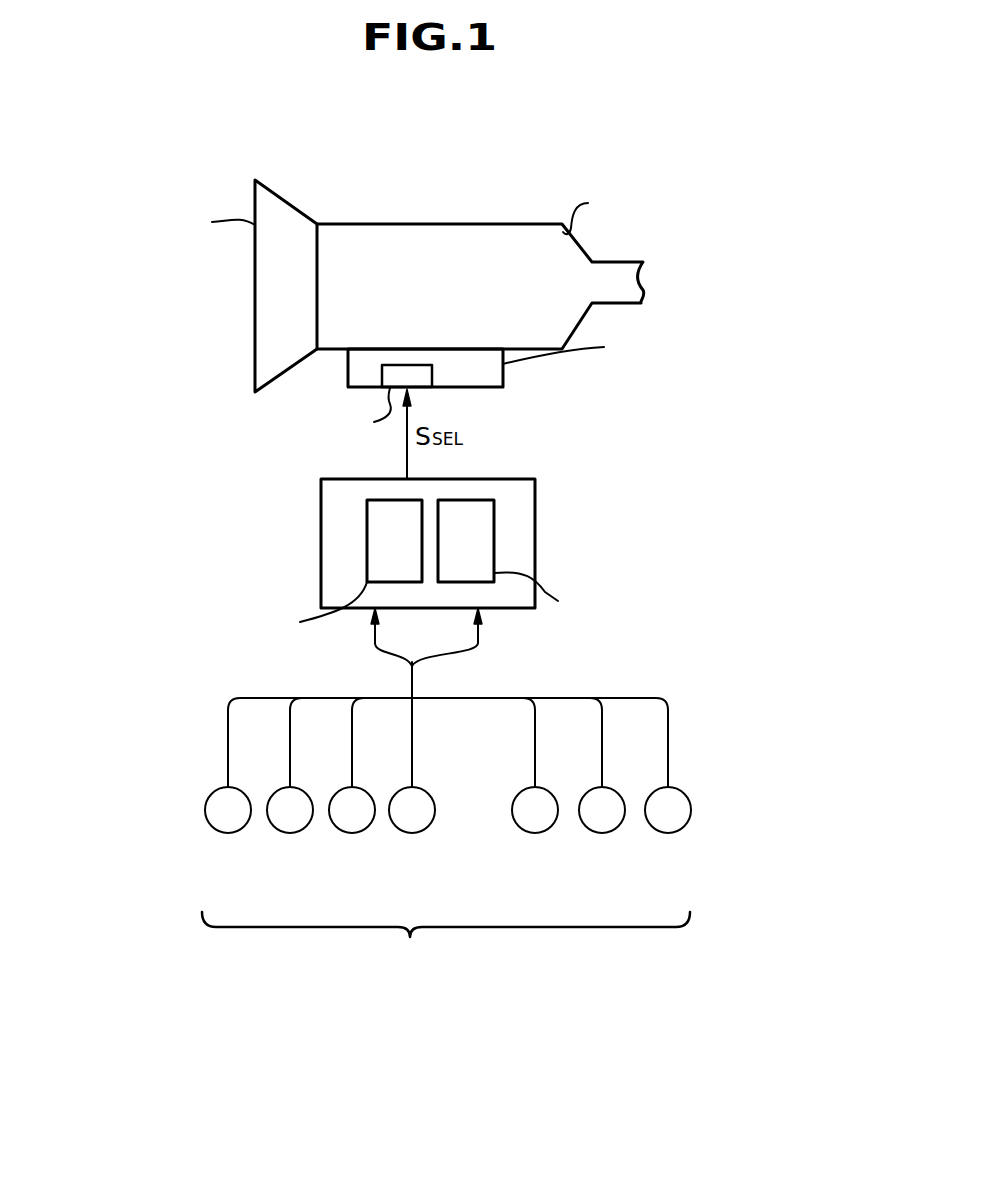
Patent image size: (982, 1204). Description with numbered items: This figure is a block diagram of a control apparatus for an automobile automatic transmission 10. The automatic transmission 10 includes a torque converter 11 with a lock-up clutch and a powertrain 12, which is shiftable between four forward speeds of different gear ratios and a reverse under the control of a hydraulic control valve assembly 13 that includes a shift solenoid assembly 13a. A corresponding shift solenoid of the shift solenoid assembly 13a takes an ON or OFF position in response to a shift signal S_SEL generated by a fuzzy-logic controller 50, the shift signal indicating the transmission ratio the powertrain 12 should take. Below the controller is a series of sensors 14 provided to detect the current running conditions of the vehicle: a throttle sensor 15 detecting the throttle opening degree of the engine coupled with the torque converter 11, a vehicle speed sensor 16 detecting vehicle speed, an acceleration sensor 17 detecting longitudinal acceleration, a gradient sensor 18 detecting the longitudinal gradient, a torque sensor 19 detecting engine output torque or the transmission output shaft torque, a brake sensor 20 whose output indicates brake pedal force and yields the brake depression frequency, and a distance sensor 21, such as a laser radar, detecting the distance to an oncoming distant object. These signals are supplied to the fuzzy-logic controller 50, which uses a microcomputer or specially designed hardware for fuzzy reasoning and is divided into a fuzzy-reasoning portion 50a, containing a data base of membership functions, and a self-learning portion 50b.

The automatic transmission 10 is at (463, 288).
The torque converter 11 is at (300, 210).
The powertrain 12 is at (450, 224).
The hydraulic control valve assembly 13 is at (503, 376).
The shift solenoid assembly 13a is at (432, 374).
The series of sensors 14 is at (445, 865).
The throttle sensor 15 is at (228, 833).
The vehicle speed sensor 16 is at (290, 833).
The acceleration sensor 17 is at (352, 833).
The gradient sensor 18 is at (412, 833).
The torque sensor 19 is at (535, 833).
The brake sensor 20 is at (602, 833).
The distance sensor 21 is at (668, 833).
The fuzzy-logic controller 50 is at (535, 496).
The fuzzy-reasoning portion 50a is at (367, 553).
The self-learning portion 50b is at (494, 558).